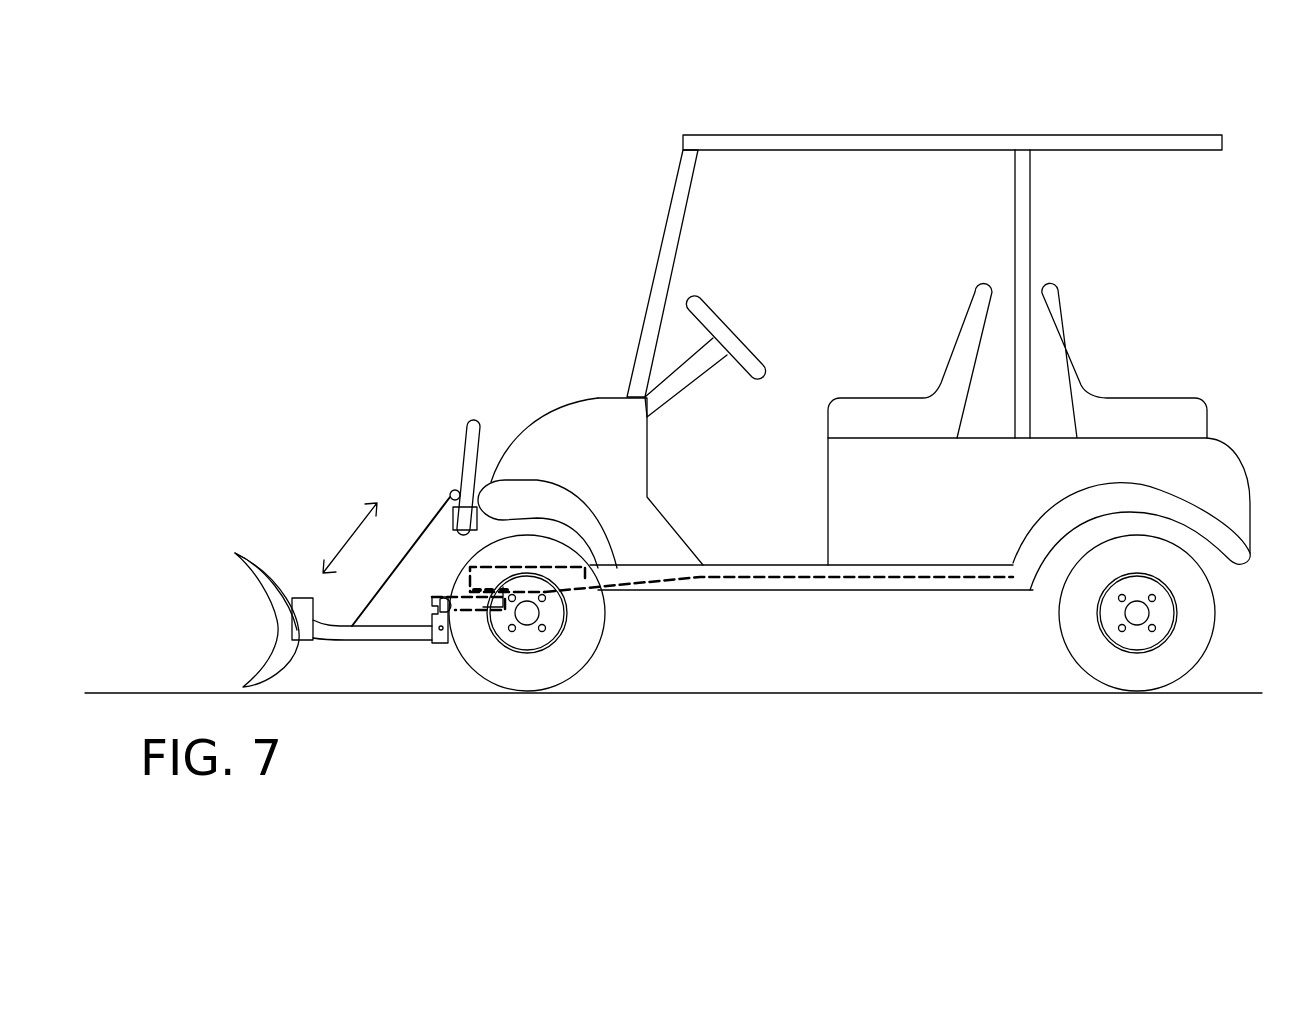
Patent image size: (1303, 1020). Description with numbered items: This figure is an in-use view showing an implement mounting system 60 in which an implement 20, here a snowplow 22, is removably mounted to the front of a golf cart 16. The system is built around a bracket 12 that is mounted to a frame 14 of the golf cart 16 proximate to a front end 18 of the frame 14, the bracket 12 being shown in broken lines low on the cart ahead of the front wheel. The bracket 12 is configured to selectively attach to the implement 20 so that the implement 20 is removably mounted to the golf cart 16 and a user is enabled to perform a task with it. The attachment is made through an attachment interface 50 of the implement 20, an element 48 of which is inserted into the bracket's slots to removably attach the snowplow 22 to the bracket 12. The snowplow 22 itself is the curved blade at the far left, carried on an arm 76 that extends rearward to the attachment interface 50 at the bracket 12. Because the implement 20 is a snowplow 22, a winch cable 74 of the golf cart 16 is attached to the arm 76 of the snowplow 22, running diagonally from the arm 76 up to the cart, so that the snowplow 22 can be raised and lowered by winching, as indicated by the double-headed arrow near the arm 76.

The bracket 12 is at (478, 602).
The frame 14 is at (795, 590).
The golf cart 16 is at (1027, 477).
The front end 18 is at (470, 563).
The implement 20 is at (244, 548).
The snowplow 22 is at (260, 554).
The element 48 is at (432, 630).
The attachment interface 50 is at (450, 640).
The implement mounting system 60 is at (533, 133).
The winch cable 74 is at (421, 530).
The arm 76 is at (328, 620).